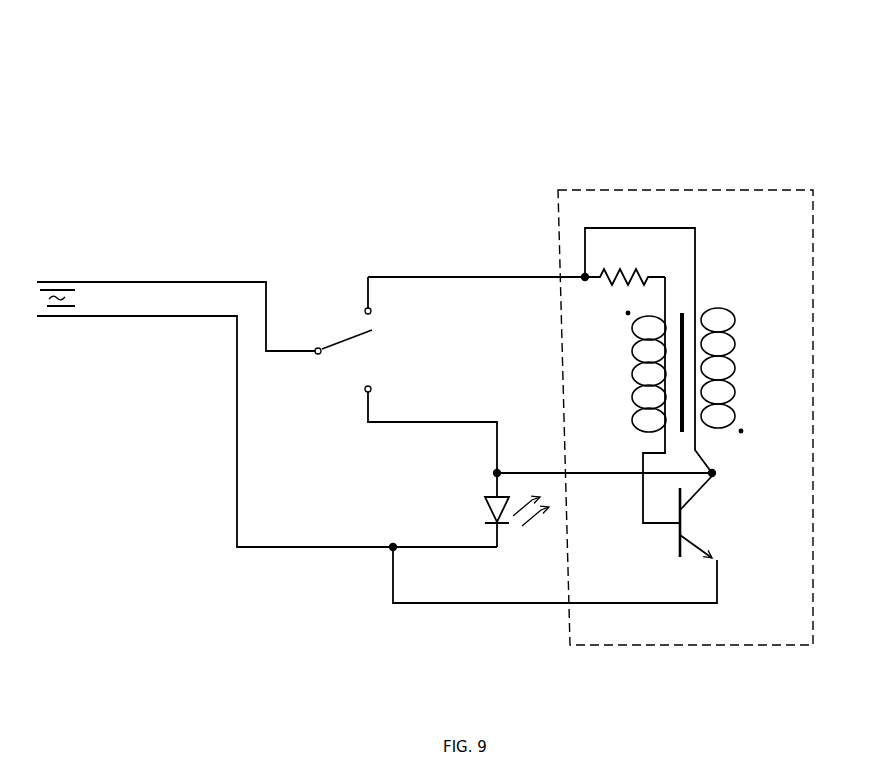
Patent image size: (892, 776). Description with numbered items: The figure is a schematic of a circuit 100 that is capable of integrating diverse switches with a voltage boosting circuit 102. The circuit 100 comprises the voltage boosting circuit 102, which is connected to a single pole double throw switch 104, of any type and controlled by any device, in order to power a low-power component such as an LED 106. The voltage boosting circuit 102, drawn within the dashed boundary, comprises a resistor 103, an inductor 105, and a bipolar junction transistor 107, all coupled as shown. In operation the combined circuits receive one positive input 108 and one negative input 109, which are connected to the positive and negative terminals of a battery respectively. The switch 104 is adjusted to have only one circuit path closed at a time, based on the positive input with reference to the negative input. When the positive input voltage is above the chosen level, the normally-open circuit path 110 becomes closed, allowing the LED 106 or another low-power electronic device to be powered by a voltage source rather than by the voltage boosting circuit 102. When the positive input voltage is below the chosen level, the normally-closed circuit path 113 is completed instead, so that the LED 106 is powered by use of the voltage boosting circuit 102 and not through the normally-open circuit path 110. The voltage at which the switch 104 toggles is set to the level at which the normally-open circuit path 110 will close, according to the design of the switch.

The circuit 100 is at (418, 143).
The voltage boosting circuit 102 is at (668, 185).
The resistor 103 is at (647, 350).
The single pole double throw switch 104 is at (322, 300).
The inductor 105 is at (703, 400).
The LED 106 is at (491, 520).
The bipolar junction transistor 107 is at (675, 514).
The positive input 108 is at (176, 296).
The negative input 109 is at (377, 459).
The normally-open circuit path 110 is at (538, 439).
The normally-closed circuit path 113 is at (476, 259).